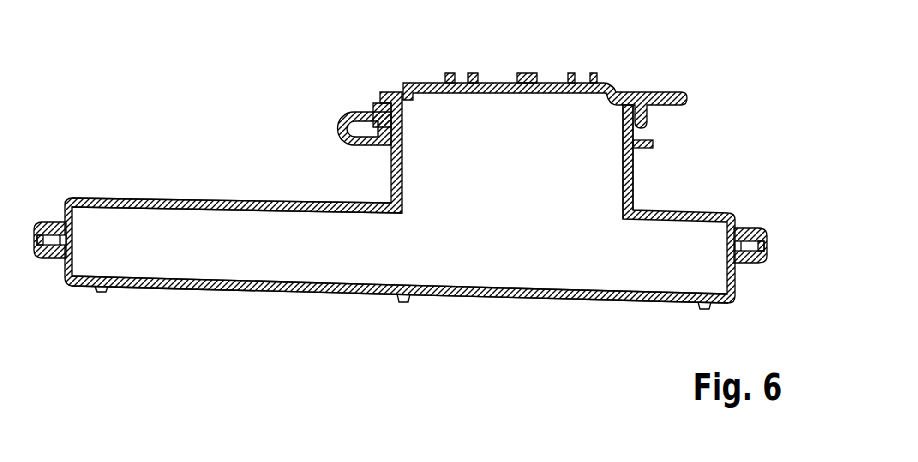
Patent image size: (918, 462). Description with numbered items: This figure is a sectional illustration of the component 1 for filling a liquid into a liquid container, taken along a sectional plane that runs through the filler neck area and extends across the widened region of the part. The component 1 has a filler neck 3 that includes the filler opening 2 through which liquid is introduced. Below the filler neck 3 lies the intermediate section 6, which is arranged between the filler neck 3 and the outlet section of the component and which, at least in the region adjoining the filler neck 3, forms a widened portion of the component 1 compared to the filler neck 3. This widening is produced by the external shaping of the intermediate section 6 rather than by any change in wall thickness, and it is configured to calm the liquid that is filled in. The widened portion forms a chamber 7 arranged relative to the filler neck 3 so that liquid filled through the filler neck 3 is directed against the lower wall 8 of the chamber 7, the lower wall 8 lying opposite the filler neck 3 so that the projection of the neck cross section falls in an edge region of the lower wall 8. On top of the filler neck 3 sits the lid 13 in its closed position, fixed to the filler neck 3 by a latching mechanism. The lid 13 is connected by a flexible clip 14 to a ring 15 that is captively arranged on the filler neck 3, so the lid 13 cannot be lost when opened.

The component 1 is at (736, 70).
The filler opening 2 is at (545, 74).
The filler neck 3 is at (633, 176).
The intermediate section 6 is at (243, 300).
The chamber 7 is at (162, 202).
The lower wall 8 is at (540, 298).
The lid 13 is at (488, 83).
The flexible clip 14 is at (338, 125).
The ring 15 is at (650, 138).